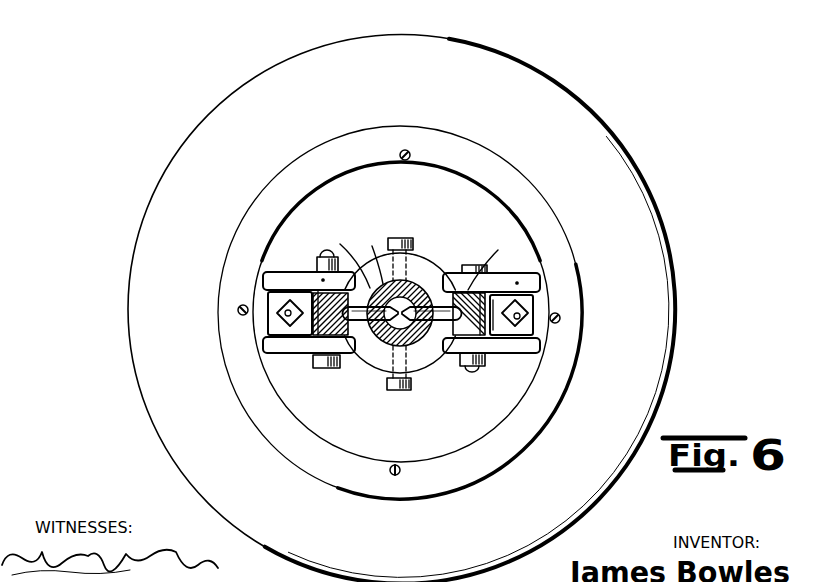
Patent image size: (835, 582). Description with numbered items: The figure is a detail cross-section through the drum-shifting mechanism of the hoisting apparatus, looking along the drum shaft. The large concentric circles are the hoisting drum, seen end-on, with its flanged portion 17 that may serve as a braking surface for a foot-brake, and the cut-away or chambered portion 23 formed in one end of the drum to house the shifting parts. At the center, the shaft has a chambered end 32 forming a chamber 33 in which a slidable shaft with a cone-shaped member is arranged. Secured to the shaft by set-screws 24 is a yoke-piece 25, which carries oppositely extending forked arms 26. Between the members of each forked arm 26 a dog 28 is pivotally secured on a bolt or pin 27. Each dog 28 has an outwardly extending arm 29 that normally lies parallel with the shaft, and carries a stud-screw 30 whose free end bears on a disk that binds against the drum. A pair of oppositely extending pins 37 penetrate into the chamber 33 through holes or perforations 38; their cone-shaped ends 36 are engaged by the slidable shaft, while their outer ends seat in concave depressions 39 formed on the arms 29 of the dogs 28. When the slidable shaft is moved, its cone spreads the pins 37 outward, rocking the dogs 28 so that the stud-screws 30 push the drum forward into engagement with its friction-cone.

The flanged portion 17 is at (621, 183).
The chambered portion 23 is at (478, 201).
The set-screw 24 is at (412, 238).
The yoke-piece 25 is at (372, 372).
The forked arm 26 is at (540, 282).
The bolt or pin 27 is at (322, 259).
The dog 28 is at (268, 301).
The outwardly extending arm 29 is at (330, 328).
The stud-screw 30 is at (287, 312).
The chambered end 32 is at (430, 305).
The chamber 33 is at (405, 324).
The cone-shaped end 36 is at (370, 251).
The pin 37 is at (372, 357).
The hole or perforation 38 is at (417, 253).
The concave depression 39 is at (318, 292).